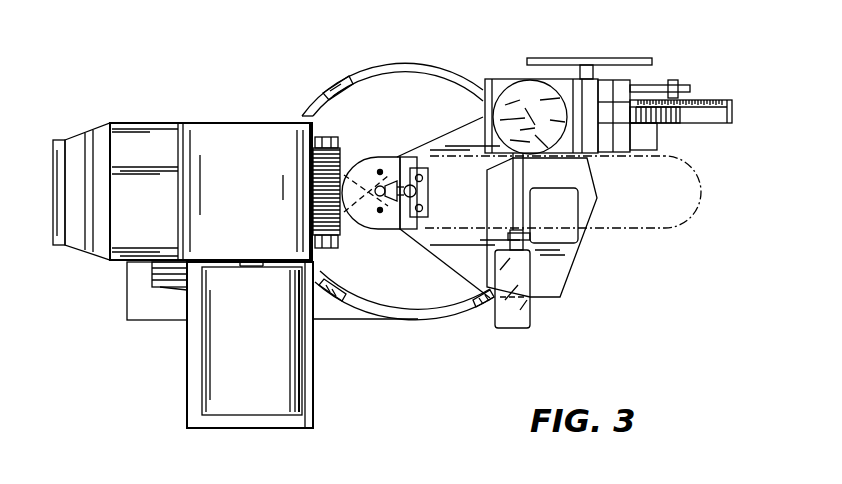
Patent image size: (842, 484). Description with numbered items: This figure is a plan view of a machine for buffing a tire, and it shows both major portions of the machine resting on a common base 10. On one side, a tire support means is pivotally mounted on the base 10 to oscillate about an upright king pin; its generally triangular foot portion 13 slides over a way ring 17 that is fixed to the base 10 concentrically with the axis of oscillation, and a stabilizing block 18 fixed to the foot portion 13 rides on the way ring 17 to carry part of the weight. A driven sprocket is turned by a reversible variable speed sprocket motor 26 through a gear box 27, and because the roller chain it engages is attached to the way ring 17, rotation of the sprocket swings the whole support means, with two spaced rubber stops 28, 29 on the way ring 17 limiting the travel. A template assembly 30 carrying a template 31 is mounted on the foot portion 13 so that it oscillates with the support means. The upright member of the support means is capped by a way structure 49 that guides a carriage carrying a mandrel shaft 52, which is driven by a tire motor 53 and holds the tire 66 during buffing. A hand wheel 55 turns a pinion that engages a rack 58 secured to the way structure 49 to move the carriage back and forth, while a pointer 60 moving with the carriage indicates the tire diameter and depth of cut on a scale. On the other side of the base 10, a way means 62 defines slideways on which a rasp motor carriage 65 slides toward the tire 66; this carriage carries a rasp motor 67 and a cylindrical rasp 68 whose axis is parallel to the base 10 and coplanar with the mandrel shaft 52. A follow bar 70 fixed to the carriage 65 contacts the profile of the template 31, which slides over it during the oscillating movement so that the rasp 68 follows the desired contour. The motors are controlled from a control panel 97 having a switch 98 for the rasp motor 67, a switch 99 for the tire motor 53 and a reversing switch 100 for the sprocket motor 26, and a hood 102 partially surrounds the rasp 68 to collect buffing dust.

The base 10 is at (162, 307).
The foot portion 13 is at (460, 278).
The way ring 17 is at (423, 312).
The stabilizing block 18 is at (482, 302).
The sprocket motor 26 is at (530, 318).
The gear box 27 is at (580, 213).
The rubber stop 28 is at (323, 292).
The rubber stop 29 is at (330, 88).
The template assembly 30 is at (417, 131).
The template 31 is at (377, 230).
The way structure 49 is at (695, 160).
The mandrel shaft 52 is at (512, 187).
The tire motor 53 is at (517, 100).
The hand wheel 55 is at (645, 60).
The rack 58 is at (717, 117).
The pointer 60 is at (680, 80).
The way means 62 is at (170, 268).
The rasp motor carriage 65 is at (197, 418).
The tire 66 is at (703, 200).
The rasp motor 67 is at (248, 393).
The cylindrical rasp 68 is at (332, 168).
The follow bar 70 is at (338, 240).
The control panel 97 is at (590, 62).
The switch 98 is at (645, 152).
The switch 99 is at (657, 123).
The reversing switch 100 is at (647, 84).
The hood 102 is at (232, 122).